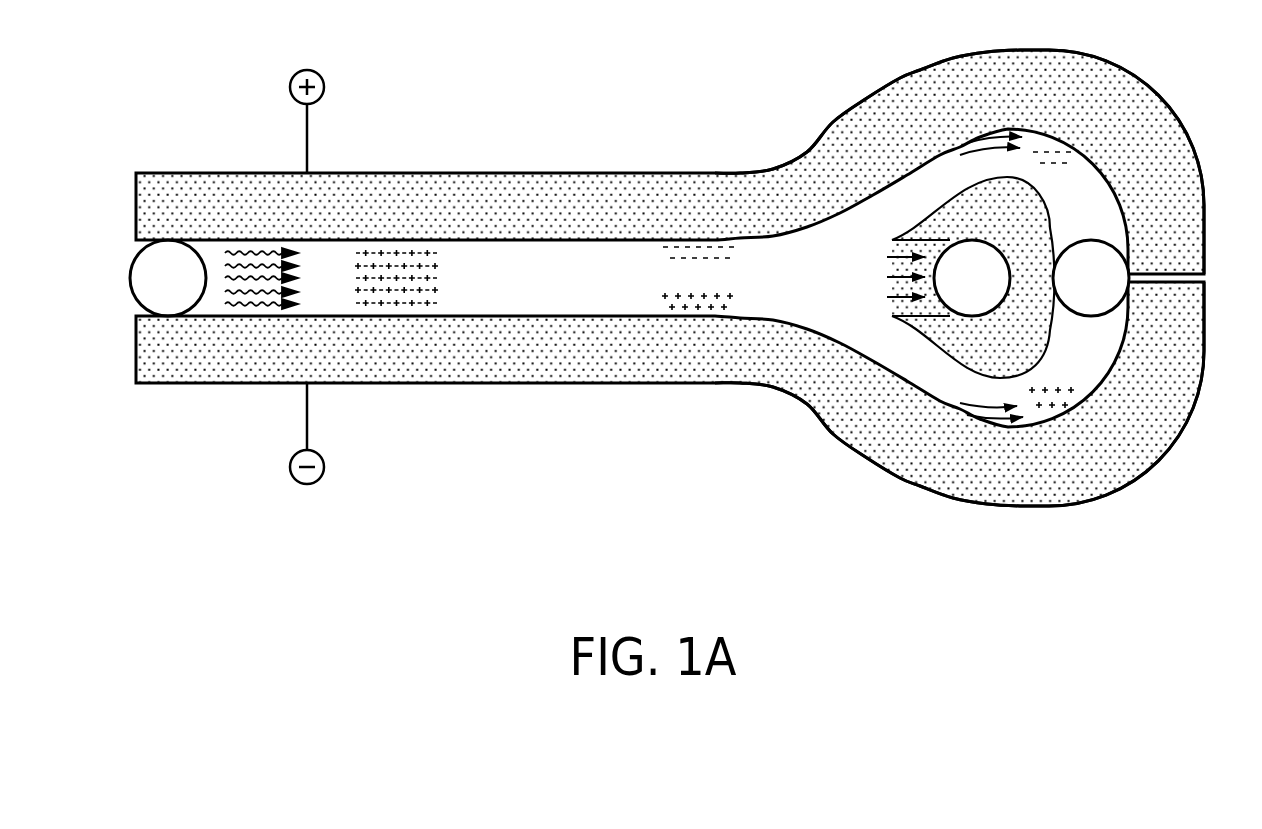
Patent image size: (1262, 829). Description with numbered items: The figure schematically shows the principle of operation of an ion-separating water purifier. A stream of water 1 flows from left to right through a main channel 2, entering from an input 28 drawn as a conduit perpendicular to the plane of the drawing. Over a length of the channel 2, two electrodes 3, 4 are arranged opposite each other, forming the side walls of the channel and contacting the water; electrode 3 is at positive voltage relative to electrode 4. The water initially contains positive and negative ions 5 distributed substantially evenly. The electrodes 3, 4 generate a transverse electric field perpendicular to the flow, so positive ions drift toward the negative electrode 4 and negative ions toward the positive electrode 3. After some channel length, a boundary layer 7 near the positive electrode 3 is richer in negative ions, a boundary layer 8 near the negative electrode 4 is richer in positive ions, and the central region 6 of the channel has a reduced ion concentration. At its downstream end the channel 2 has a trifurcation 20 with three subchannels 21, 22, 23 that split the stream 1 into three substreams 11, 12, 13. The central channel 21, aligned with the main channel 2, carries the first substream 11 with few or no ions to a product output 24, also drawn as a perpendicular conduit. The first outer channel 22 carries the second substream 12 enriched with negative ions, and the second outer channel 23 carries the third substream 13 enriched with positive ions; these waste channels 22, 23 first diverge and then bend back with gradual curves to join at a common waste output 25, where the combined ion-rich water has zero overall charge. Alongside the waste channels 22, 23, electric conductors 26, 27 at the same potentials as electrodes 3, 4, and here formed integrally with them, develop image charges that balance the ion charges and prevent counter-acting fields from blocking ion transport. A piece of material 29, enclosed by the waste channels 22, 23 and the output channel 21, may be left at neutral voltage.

The stream of water 1 is at (243, 300).
The main channel 2 is at (495, 272).
The electrode 3 is at (205, 173).
The electrode 4 is at (268, 384).
The positive and negative ions 5 is at (398, 218).
The central region of reduced ion concentration 6 is at (650, 283).
The boundary layer rich in negative ions 7 is at (680, 225).
The boundary layer rich in positive ions 8 is at (683, 328).
The first substream 11 is at (887, 254).
The second substream 12 is at (978, 140).
The third substream 13 is at (990, 420).
The trifurcation 20 is at (678, 287).
The central channel 21 is at (923, 312).
The first outer channel 22 is at (920, 173).
The second outer channel 23 is at (948, 392).
The product output 24 is at (977, 260).
The common waste output 25 is at (1093, 266).
The electric conductor 26 is at (1100, 102).
The electric conductor 27 is at (1143, 413).
The input 28 is at (132, 266).
The piece of material 29 is at (1024, 328).